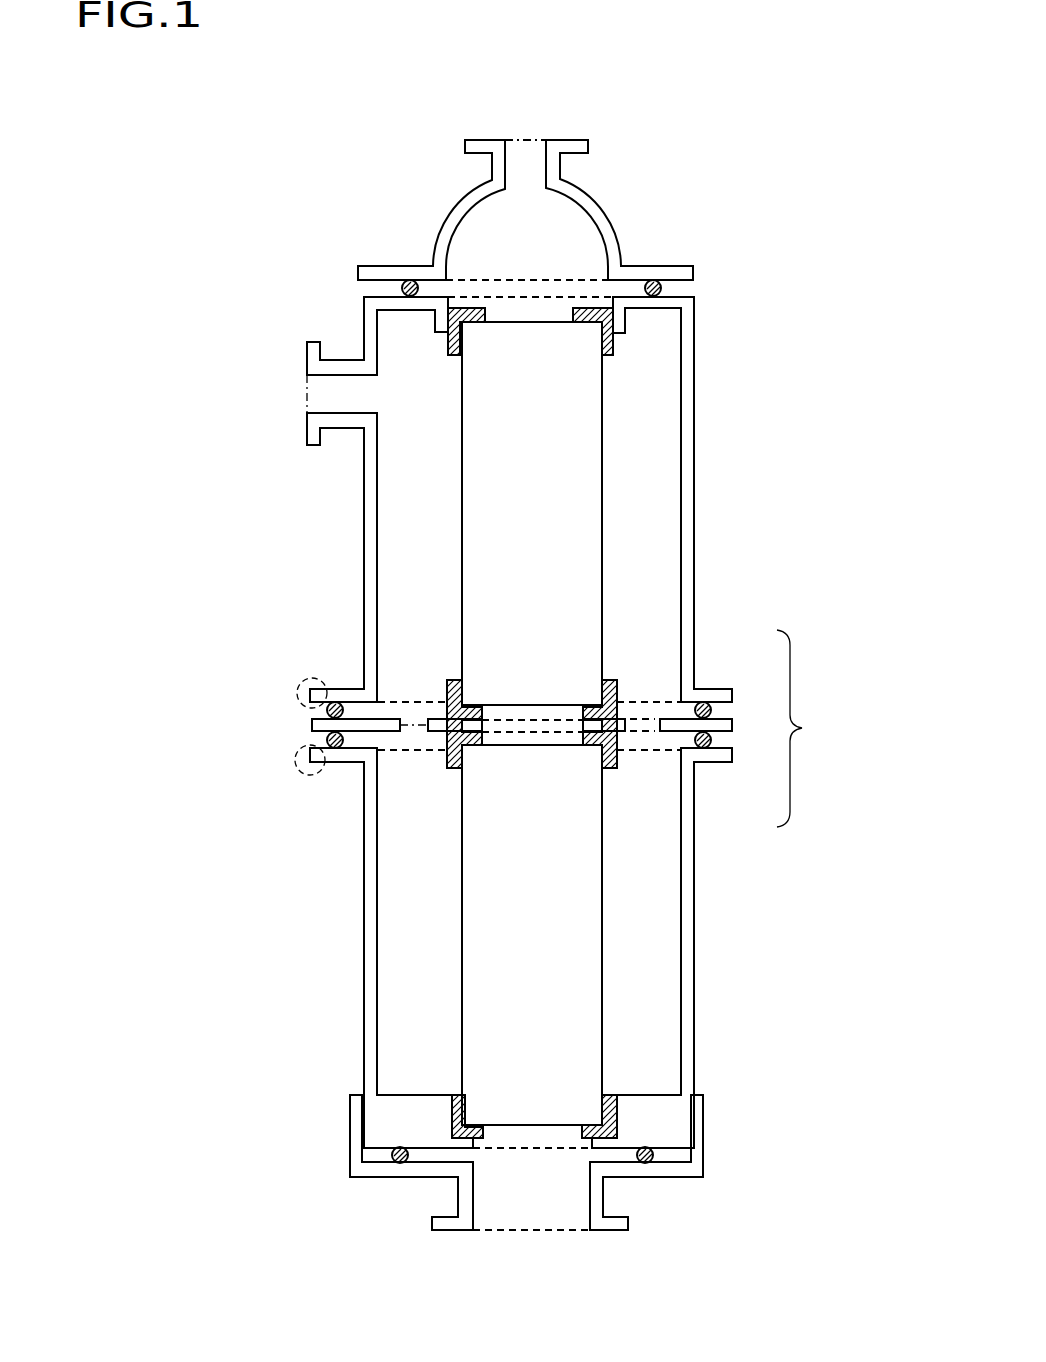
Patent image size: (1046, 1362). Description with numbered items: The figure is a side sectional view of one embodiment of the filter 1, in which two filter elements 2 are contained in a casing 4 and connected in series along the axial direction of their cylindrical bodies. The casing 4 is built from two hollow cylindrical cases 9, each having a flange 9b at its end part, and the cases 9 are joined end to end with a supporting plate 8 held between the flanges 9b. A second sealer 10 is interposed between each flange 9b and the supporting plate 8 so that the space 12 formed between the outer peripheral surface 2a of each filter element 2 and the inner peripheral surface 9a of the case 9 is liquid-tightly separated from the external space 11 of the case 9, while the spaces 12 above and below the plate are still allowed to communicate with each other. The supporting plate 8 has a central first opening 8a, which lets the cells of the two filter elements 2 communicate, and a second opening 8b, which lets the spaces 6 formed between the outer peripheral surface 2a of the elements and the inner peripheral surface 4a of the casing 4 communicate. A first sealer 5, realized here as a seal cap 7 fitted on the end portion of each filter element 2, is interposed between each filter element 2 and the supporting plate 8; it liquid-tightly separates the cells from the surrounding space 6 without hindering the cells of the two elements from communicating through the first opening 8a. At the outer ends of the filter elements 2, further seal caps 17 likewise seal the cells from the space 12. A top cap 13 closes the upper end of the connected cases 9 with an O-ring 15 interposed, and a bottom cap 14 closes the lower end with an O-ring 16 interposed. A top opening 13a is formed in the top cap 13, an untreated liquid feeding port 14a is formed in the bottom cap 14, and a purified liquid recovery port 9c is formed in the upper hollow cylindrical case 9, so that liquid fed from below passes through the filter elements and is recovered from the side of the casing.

The filter 1 is at (755, 148).
The filter element 2 is at (577, 468).
The outer peripheral surface of filter element 2a is at (610, 377).
The casing 4 is at (804, 728).
The inner peripheral surface of casing 4a is at (668, 384).
The first sealer 5 is at (612, 707).
The space 6 is at (637, 430).
The seal cap 7 is at (605, 685).
The supporting plate 8 is at (312, 726).
The first opening 8a is at (530, 703).
The second opening 8b is at (419, 708).
The hollow cylindrical case 9 is at (688, 650).
The inner peripheral surface of hollow cylindrical case 9a is at (751, 714).
The flange 9b is at (300, 682).
The purified liquid recovery port 9c is at (320, 393).
The second sealer 10 is at (326, 712).
The external space 11 is at (147, 553).
The space 12 is at (728, 687).
The top cap 13 is at (610, 233).
The top opening 13a is at (524, 130).
The bottom cap 14 is at (698, 1135).
The untreated liquid feeding port 14a is at (525, 1240).
The O-ring 15 is at (663, 289).
The O-ring 16 is at (648, 1163).
The seal cap 17 is at (612, 348).